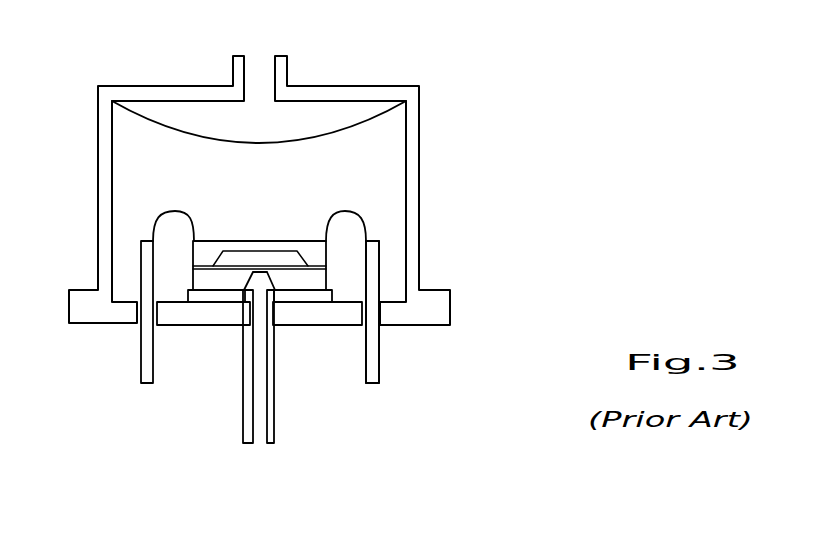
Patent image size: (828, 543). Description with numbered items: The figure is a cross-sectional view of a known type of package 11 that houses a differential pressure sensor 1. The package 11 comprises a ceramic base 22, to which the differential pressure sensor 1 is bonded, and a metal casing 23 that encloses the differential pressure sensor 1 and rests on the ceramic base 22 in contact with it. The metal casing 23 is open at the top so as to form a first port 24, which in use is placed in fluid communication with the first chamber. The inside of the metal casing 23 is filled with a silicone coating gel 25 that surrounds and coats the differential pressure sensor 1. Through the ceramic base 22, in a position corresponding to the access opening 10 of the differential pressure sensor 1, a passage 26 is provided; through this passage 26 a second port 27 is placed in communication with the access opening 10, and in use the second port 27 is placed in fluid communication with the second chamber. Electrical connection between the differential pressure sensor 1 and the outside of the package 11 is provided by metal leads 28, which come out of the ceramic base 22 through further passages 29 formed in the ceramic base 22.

The differential pressure sensor 1 is at (302, 222).
The access opening 10 is at (262, 288).
The package 11 is at (502, 160).
The ceramic base 22 is at (442, 313).
The metal casing 23 is at (346, 92).
The first port 24 is at (250, 50).
The silicone coating gel 25 is at (175, 177).
The passage 26 is at (255, 316).
The second port 27 is at (259, 445).
The metal leads 28 is at (143, 372).
The further passages 29 is at (392, 334).